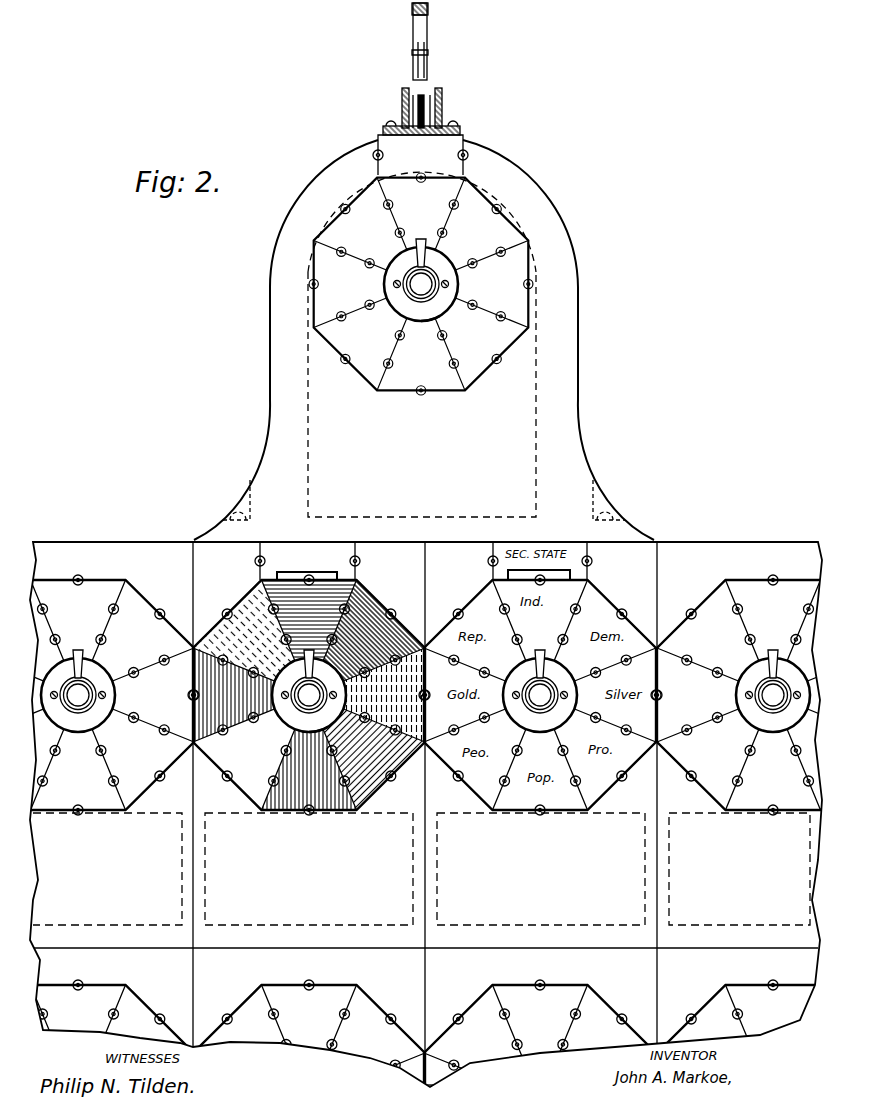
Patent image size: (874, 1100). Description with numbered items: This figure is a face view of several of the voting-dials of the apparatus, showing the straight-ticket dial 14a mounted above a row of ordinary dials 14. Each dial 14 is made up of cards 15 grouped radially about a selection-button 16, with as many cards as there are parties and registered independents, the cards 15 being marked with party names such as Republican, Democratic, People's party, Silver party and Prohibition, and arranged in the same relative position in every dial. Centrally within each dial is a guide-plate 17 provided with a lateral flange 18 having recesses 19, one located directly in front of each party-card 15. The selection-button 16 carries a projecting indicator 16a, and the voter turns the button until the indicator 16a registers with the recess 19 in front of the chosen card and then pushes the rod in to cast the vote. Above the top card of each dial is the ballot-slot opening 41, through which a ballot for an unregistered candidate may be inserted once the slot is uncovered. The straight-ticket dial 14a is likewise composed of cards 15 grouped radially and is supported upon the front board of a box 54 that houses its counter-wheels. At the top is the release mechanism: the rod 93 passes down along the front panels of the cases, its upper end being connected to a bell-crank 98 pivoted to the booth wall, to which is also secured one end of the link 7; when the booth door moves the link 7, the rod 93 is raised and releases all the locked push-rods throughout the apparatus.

The link 7 is at (413, 12).
The bell-crank 98 is at (428, 30).
The rod 93 is at (425, 108).
The box 54 is at (286, 397).
The straight-ticket dial 14a is at (506, 350).
The dial 14 is at (224, 614).
The card 15 is at (150, 793).
The selection-button 16 is at (411, 300).
The indicator 16a is at (430, 227).
The guide-plate 17 is at (440, 268).
The lateral flange 18 is at (439, 318).
The recess 19 is at (422, 325).
The ballot-slot opening 41 is at (300, 573).